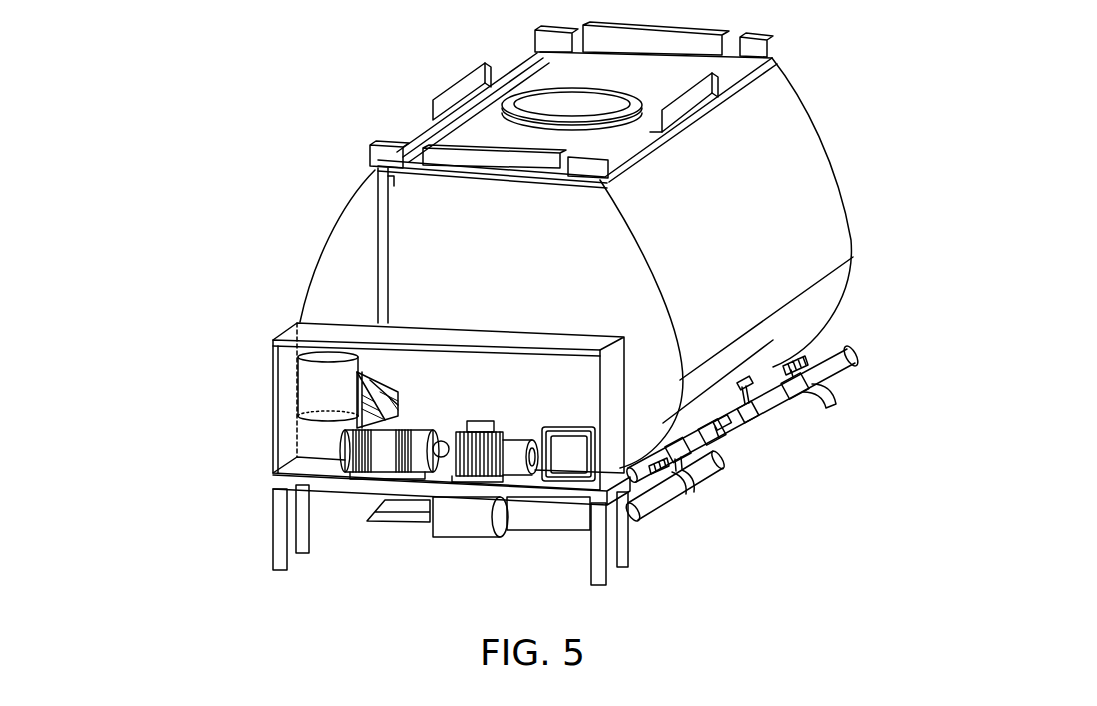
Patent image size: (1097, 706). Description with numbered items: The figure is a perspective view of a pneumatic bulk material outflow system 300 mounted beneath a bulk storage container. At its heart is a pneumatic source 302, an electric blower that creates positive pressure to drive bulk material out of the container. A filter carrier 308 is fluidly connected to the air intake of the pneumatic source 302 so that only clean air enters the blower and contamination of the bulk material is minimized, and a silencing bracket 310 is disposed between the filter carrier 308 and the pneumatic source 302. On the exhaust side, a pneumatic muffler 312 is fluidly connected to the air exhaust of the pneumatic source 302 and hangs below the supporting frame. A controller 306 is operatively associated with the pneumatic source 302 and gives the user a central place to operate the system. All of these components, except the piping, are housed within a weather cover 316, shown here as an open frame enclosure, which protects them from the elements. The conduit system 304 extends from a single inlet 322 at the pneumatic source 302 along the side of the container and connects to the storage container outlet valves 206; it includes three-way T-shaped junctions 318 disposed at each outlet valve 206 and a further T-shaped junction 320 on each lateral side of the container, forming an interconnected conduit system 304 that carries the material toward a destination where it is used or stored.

The pneumatic bulk material outflow system 300 is at (167, 185).
The pneumatic source 302 is at (428, 440).
The conduit system 304 is at (750, 433).
The controller 306 is at (577, 438).
The filter carrier 308 is at (320, 372).
The silencing bracket 310 is at (360, 374).
The pneumatic muffler 312 is at (453, 512).
The weather cover 316 is at (560, 338).
The three-way T-shaped junction 318 is at (730, 450).
The T-shaped junction 320 is at (683, 480).
The single inlet 322 is at (373, 475).
The storage container outlet valve 206 is at (710, 427).